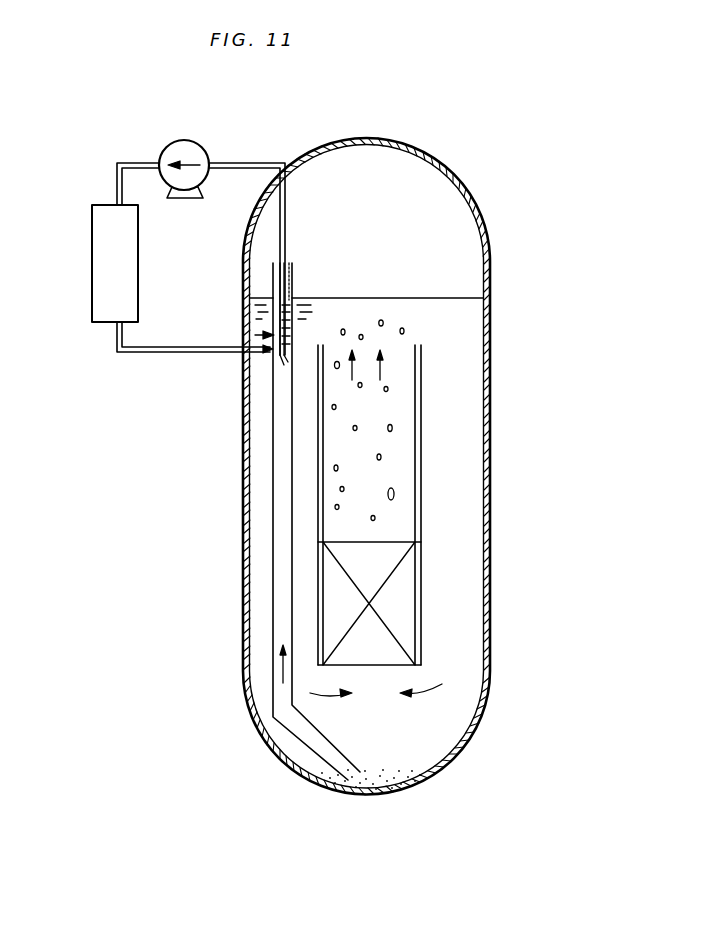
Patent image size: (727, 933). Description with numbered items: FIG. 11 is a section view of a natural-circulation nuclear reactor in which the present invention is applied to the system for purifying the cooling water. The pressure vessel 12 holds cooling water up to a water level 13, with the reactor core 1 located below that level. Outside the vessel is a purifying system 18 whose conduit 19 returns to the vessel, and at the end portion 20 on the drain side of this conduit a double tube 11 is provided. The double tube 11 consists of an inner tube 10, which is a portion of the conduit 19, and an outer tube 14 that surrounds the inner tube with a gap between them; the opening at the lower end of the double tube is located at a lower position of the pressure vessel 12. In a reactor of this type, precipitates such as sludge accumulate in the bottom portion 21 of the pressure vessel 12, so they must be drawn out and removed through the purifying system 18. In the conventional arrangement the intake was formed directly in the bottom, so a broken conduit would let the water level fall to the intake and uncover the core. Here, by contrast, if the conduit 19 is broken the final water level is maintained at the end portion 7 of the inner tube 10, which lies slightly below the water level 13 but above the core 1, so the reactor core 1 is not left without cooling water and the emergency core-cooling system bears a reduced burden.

The reactor core 1 is at (330, 580).
The opening at the end of the inner tube 7 is at (282, 358).
The inner tube 10 is at (280, 297).
The double tube 11 is at (262, 333).
The pressure vessel 12 is at (330, 146).
The water level 13 is at (460, 297).
The outer tube 14 is at (273, 645).
The purifying system 18 is at (105, 256).
The conduit 19 is at (233, 163).
The end portion on the drain side of the conduit 20 is at (282, 243).
The bottom portion of the pressure vessel 21 is at (320, 782).